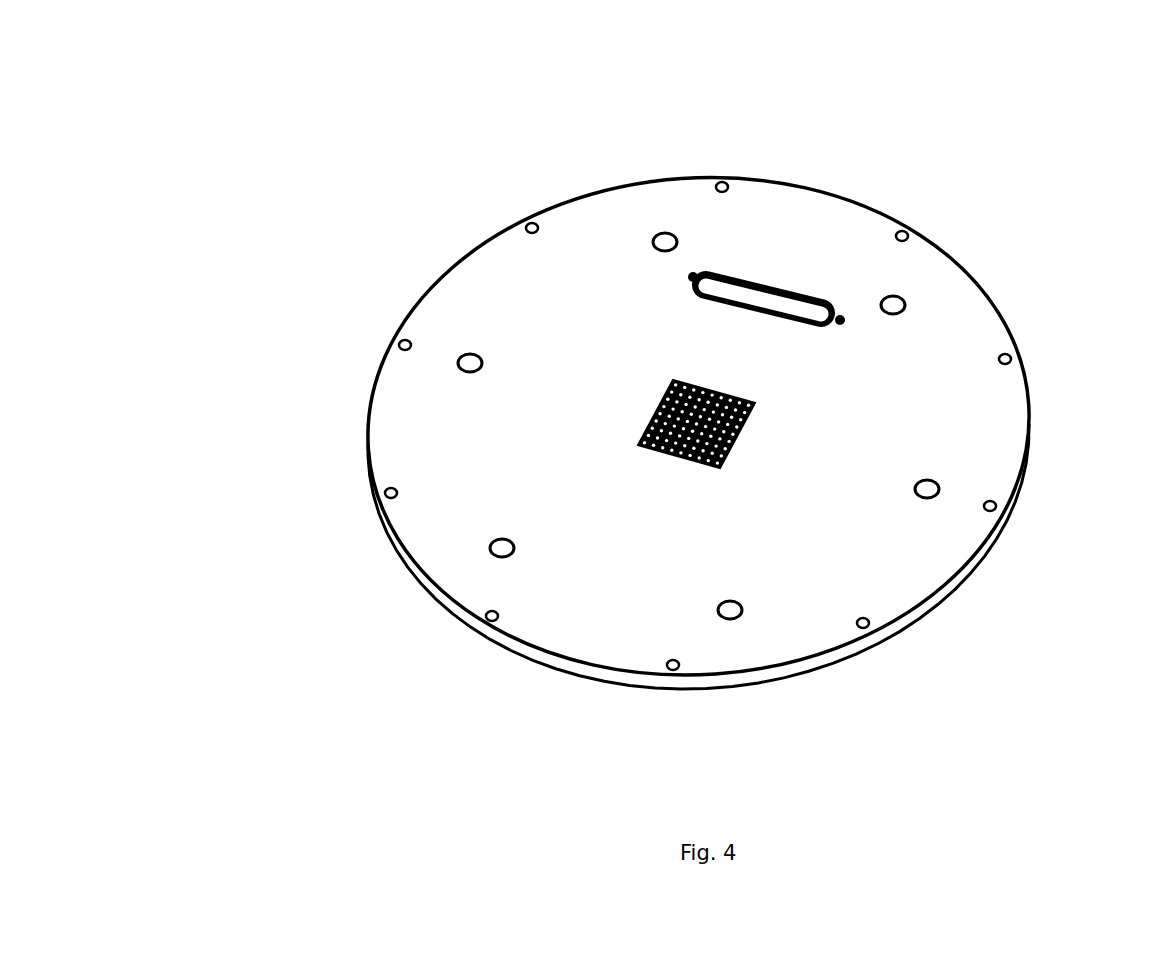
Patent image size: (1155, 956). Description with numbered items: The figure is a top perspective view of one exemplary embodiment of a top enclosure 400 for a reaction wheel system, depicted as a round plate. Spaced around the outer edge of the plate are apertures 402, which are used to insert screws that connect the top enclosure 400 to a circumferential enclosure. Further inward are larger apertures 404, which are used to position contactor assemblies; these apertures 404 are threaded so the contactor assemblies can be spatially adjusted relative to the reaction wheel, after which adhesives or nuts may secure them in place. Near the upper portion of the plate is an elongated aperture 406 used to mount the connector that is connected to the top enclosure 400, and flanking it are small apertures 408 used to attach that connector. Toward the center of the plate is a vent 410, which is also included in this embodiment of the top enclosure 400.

The top enclosure 400 is at (339, 163).
The apertures 402 is at (375, 483).
The apertures 404 is at (938, 482).
The aperture 406 is at (754, 296).
The apertures 408 is at (690, 273).
The vent 410 is at (672, 460).